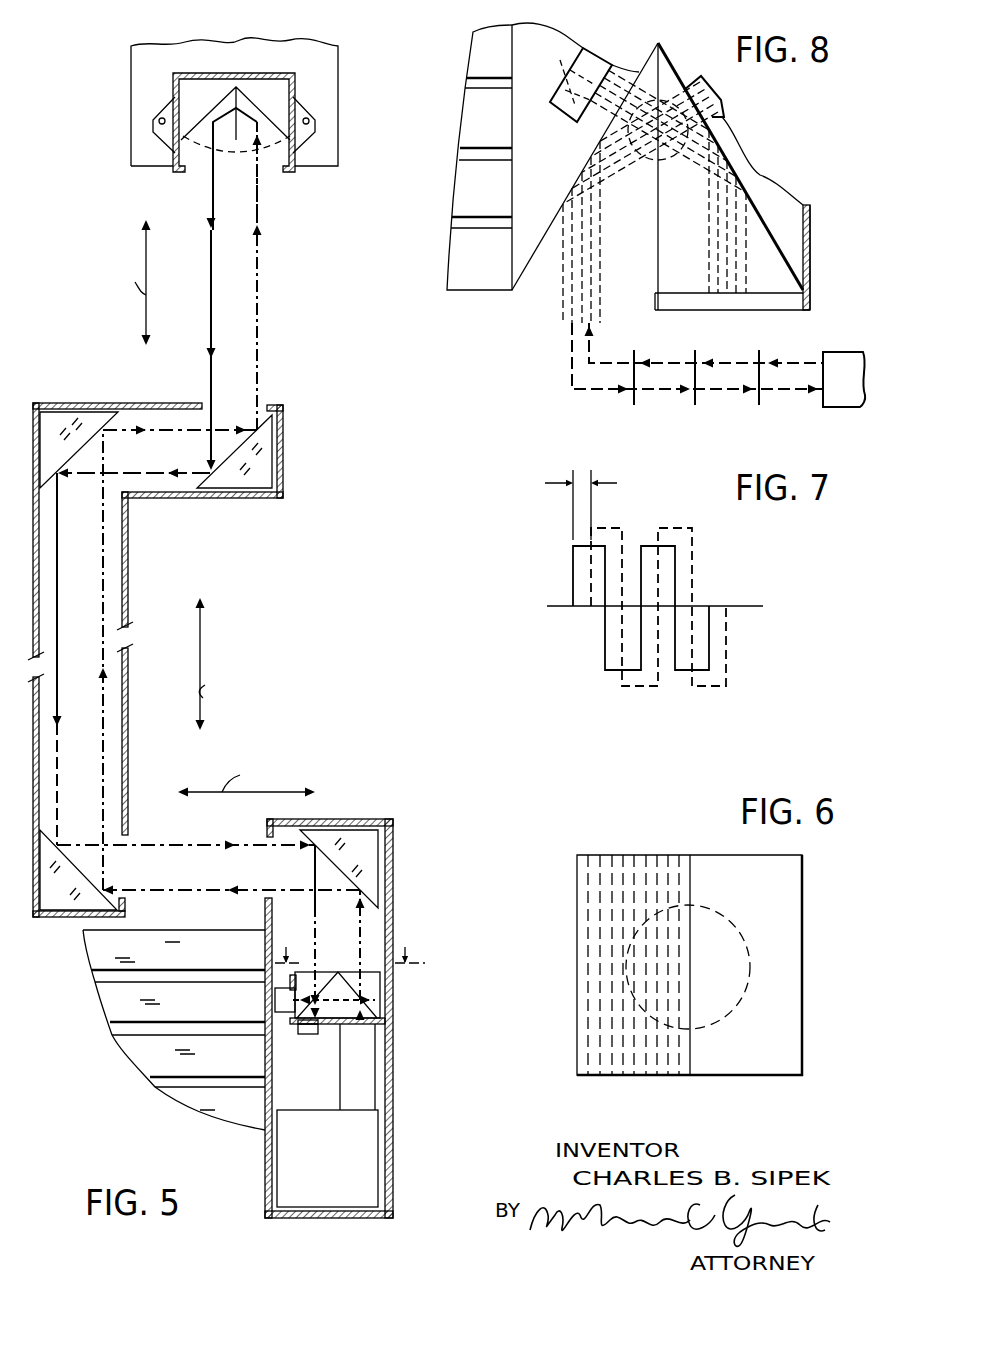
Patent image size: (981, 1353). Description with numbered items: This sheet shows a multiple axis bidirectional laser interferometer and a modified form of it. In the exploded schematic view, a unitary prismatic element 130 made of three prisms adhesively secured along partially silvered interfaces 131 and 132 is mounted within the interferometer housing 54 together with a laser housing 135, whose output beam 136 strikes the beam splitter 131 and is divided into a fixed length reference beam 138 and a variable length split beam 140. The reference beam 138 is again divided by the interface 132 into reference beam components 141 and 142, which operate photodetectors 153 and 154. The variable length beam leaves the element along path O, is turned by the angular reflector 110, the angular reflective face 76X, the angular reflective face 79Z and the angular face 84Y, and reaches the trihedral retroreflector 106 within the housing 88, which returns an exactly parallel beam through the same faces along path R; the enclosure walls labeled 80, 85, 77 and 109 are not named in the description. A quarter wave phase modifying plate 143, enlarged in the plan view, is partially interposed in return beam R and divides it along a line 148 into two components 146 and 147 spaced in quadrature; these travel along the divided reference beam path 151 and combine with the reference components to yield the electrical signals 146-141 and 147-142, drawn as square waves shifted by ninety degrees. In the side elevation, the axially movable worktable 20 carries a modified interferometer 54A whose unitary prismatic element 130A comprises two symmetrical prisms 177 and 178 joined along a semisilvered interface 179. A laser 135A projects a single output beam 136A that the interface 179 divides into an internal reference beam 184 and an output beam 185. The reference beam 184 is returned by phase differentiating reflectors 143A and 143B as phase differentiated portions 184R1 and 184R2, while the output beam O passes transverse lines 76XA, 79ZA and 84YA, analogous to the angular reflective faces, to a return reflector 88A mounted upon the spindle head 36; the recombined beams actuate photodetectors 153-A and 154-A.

In FIG. 5, the spindle head 36 is at (325, 100).
In FIG. 5, the housing 88 is at (295, 75).
In FIG. 5, the retroreflector 106 is at (193, 170).
In FIG. 5, the optical housing channel 80 is at (35, 404).
In FIG. 5, the angular reflective face 79Z is at (88, 445).
In FIG. 5, the angular reflective face 84Y is at (233, 443).
In FIG. 5, the housing section 85 is at (284, 467).
In FIG. 5, the angular reflective face 76X is at (82, 865).
In FIG. 5, the housing section 77 is at (48, 918).
In FIG. 5, the housing section 109 is at (330, 820).
In FIG. 5, the angular reflector 110 is at (350, 880).
In FIG. 5, the interferometer housing 54 is at (396, 1118).
In FIG. 5, the quarter wave phase modifying plate 143 is at (300, 972).
In FIG. 6, the quarter wave phase modifying plate 143 is at (638, 1058).
In FIG. 5, the beam splitting interface 131 is at (380, 985).
In FIG. 5, the laser output beam 136 is at (377, 1010).
In FIG. 5, the variable length split beam 140 is at (375, 992).
In FIG. 5, the divided reference beam path 151 is at (290, 990).
In FIG. 5, the reference beam component 141 is at (280, 1000).
In FIG. 5, the fixed length reference beam 138 is at (360, 1022).
In FIG. 5, the photodetector 153 is at (295, 1020).
In FIG. 5, the photodetector 154 is at (308, 1035).
In FIG. 5, the reference beam component 142 is at (338, 1026).
In FIG. 5, the laser housing 135 is at (355, 1070).
In FIG. 5, the beam splitting interface 132 is at (318, 935).
In FIG. 5, the unitary prismatic element 130 is at (348, 968).
In FIG. 8, the axially movable worktable 20 is at (462, 270).
In FIG. 8, the prism 177 is at (552, 246).
In FIG. 8, the prism 178 is at (666, 65).
In FIG. 8, the photodetector 154-A is at (575, 42).
In FIG. 8, the photodetector 153-A is at (570, 104).
In FIG. 8, the single output beam 136A is at (688, 90).
In FIG. 8, the laser 135A is at (724, 117).
In FIG. 8, the output beam 185 is at (632, 165).
In FIG. 8, the unitary prismatic element 130A is at (645, 55).
In FIG. 8, the internal reference beam 184 is at (732, 166).
In FIG. 8, the phase differentiated reference beam portion 184R1 is at (722, 250).
In FIG. 8, the phase differentiated reference beam portion 184R2 is at (750, 258).
In FIG. 8, the partially reflective interface 179 is at (654, 250).
In FIG. 8, the phase differentiating reflector 143A is at (690, 300).
In FIG. 8, the phase differentiating reflector 143B is at (805, 290).
In FIG. 8, the modified interferometer 54A is at (780, 205).
In FIG. 8, the transverse line 76XA is at (630, 393).
In FIG. 8, the transverse line 79ZA is at (692, 394).
In FIG. 8, the transverse line 84YA is at (758, 394).
In FIG. 8, the return reflector 88A is at (812, 398).
In FIG. 7, the quadrature spaced electrical signal 146-141 is at (572, 578).
In FIG. 7, the quadrature spaced electrical signal 147-142 is at (606, 527).
In FIG. 6, the dividing line 148 is at (692, 903).
In FIG. 6, the beam component 146 is at (645, 953).
In FIG. 6, the beam component 147 is at (710, 1008).